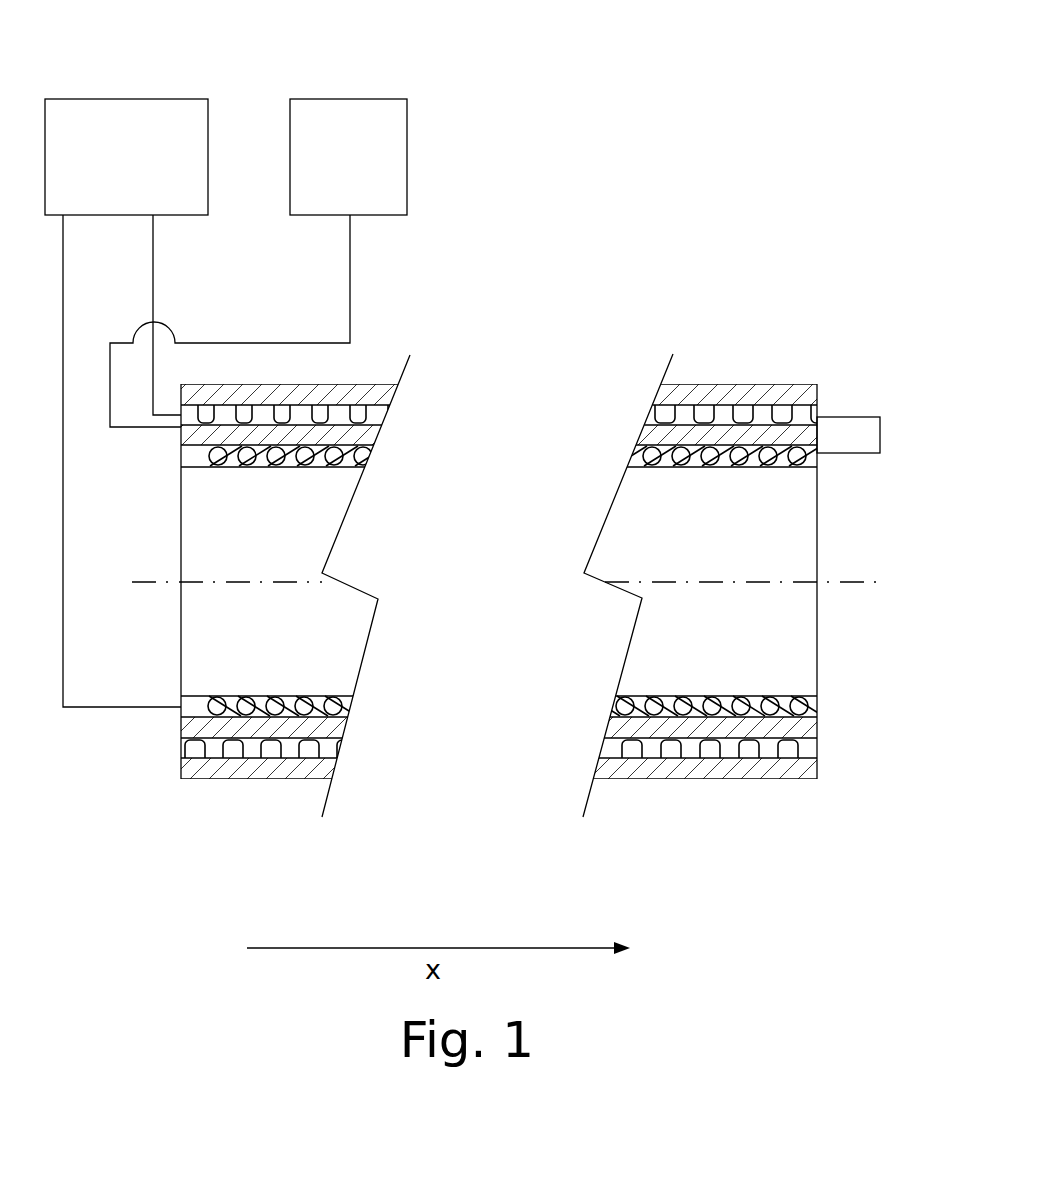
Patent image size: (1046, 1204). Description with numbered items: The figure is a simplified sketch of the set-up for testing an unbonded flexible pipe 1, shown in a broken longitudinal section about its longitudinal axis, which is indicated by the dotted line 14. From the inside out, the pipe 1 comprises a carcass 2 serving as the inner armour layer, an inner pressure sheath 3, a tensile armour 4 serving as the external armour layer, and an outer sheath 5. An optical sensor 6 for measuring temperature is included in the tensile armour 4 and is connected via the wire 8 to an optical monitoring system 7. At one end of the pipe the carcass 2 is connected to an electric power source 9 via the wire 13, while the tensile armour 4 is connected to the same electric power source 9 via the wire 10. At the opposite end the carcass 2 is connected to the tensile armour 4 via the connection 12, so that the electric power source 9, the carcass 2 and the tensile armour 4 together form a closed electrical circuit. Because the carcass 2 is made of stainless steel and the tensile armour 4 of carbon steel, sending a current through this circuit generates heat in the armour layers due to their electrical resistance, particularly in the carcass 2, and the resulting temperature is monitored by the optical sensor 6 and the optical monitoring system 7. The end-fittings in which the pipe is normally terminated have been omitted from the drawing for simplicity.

The unbonded flexible pipe 1 is at (758, 378).
The carcass 2 is at (817, 707).
The inner pressure sheath 3 is at (817, 728).
The tensile armour 4 is at (817, 748).
The outer sheath 5 is at (817, 768).
The optical sensor 6 is at (182, 427).
The optical monitoring system 7 is at (348, 99).
The wire 8 is at (350, 255).
The electric power source 9 is at (127, 99).
The wire 10 is at (153, 255).
The connection 12 is at (880, 437).
The wire 13 is at (118, 707).
The longitudinal axis 14 is at (872, 582).